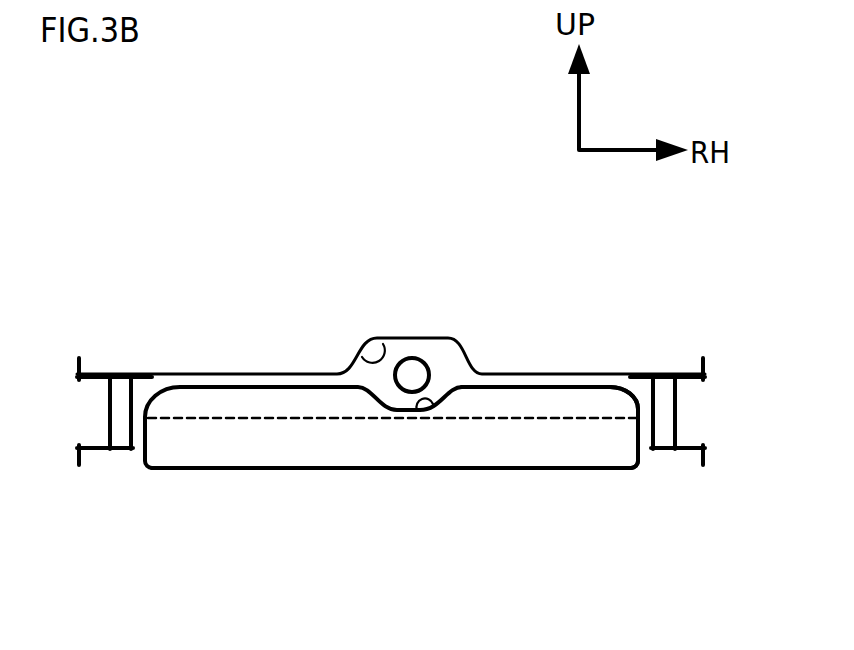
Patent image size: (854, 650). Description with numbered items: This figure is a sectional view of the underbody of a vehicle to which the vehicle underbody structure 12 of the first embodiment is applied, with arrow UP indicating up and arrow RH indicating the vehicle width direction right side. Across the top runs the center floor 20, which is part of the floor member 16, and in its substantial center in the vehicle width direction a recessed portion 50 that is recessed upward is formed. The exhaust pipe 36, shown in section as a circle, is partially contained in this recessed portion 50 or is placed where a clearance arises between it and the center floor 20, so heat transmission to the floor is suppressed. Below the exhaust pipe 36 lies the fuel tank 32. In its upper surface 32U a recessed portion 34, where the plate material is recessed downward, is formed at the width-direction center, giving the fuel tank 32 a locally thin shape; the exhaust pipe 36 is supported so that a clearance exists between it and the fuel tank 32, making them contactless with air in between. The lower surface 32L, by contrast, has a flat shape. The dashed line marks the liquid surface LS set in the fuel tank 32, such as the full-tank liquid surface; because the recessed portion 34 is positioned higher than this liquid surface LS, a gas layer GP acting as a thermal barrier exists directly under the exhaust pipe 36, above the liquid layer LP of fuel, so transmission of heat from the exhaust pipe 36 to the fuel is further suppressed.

The vehicle underbody structure 12 is at (391, 435).
The floor member 16 is at (391, 323).
The center floor 20 is at (203, 373).
The fuel tank 32 is at (183, 472).
The upper surface of the fuel tank 32U is at (557, 373).
The lower surface of the fuel tank 32L is at (502, 470).
The recessed portion 34 is at (435, 408).
The exhaust pipe 36 is at (420, 357).
The recessed portion 50 is at (362, 352).
The liquid surface LS is at (505, 417).
The gas layer GP is at (592, 407).
The liquid layer LP is at (583, 442).